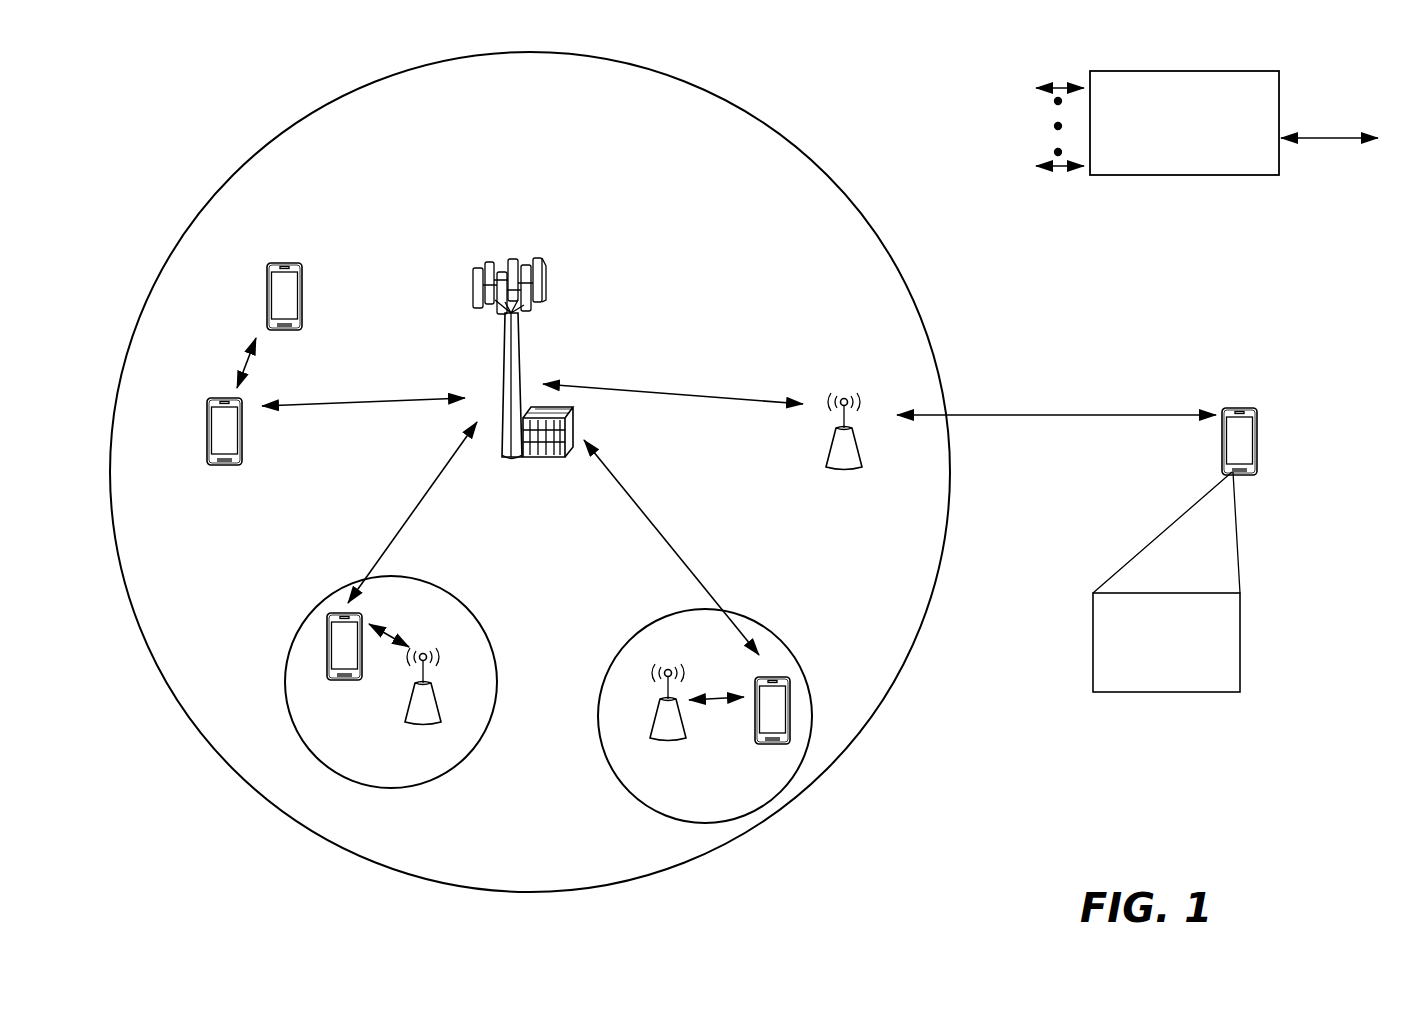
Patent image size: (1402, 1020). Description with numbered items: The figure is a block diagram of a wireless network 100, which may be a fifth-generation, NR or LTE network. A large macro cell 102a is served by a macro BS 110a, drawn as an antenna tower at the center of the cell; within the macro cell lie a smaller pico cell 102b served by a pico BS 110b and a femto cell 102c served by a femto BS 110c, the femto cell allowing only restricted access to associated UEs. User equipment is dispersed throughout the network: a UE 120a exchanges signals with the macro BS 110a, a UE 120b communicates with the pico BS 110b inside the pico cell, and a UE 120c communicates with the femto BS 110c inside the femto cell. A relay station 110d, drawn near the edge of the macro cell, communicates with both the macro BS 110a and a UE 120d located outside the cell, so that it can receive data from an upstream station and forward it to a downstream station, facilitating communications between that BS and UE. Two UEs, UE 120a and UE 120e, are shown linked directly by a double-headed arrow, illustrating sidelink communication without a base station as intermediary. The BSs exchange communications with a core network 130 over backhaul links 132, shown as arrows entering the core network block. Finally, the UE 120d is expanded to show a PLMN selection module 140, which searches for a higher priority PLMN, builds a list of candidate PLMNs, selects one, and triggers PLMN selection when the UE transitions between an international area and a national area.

The wireless network 100 is at (188, 92).
The macro cell 102a is at (807, 155).
The pico cell 102b is at (480, 620).
The femto cell 102c is at (640, 629).
The macro BS 110a is at (519, 257).
The pico BS 110b is at (442, 706).
The femto BS 110c is at (652, 729).
The relay station 110d is at (845, 395).
The UE 120a is at (205, 431).
The UE 120b is at (330, 682).
The UE 120c is at (758, 745).
The UE 120d is at (1252, 476).
The UE 120e is at (265, 283).
The core network 130 is at (1157, 68).
The backhaul links 132 is at (1057, 84).
The PLMN selection module 140 is at (1168, 694).